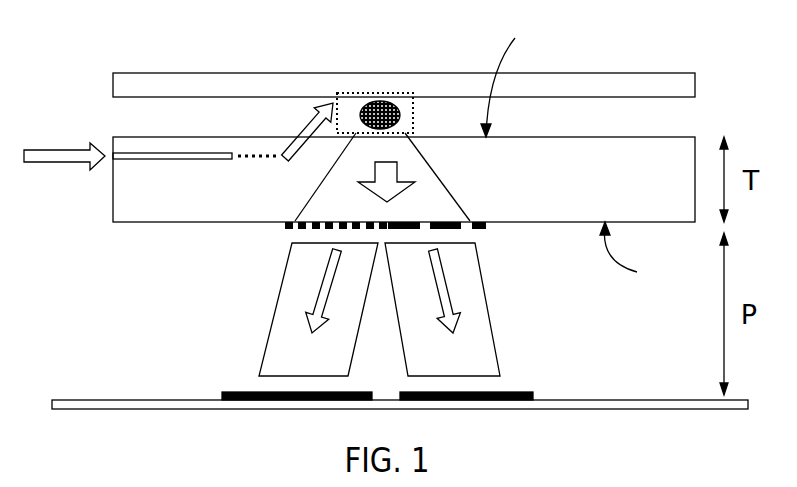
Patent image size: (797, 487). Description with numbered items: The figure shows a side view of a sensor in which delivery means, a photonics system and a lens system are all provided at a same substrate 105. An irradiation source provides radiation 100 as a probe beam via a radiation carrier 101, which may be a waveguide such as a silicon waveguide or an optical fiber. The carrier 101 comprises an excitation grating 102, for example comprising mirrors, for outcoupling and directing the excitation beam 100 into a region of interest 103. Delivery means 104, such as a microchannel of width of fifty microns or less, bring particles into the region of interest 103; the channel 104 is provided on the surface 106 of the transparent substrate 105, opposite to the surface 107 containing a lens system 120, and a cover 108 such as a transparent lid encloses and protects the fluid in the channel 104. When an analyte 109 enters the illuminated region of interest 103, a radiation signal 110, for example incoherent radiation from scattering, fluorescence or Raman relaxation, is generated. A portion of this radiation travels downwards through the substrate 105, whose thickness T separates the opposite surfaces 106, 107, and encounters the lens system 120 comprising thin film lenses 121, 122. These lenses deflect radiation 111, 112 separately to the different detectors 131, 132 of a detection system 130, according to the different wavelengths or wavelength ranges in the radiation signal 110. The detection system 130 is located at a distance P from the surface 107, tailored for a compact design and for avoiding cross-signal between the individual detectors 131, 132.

The radiation 100 is at (100, 162).
The radiation carrier 101 is at (181, 153).
The excitation grating 102 is at (248, 153).
The region of interest 103 is at (358, 93).
The delivery means 104 is at (627, 132).
The substrate 105 is at (627, 189).
The surface 106 is at (527, 81).
The surface 107 is at (642, 255).
The cover 108 is at (596, 72).
The analyte 109 is at (388, 110).
The radiation signal 110 is at (439, 178).
The deflected radiation 111 is at (273, 363).
The deflected radiation 112 is at (423, 363).
The lens system 120 is at (250, 236).
The thin film lens 121 is at (298, 229).
The thin film lens 122 is at (483, 230).
The detection system 130 is at (177, 382).
The detector 131 is at (247, 392).
The detector 132 is at (515, 393).